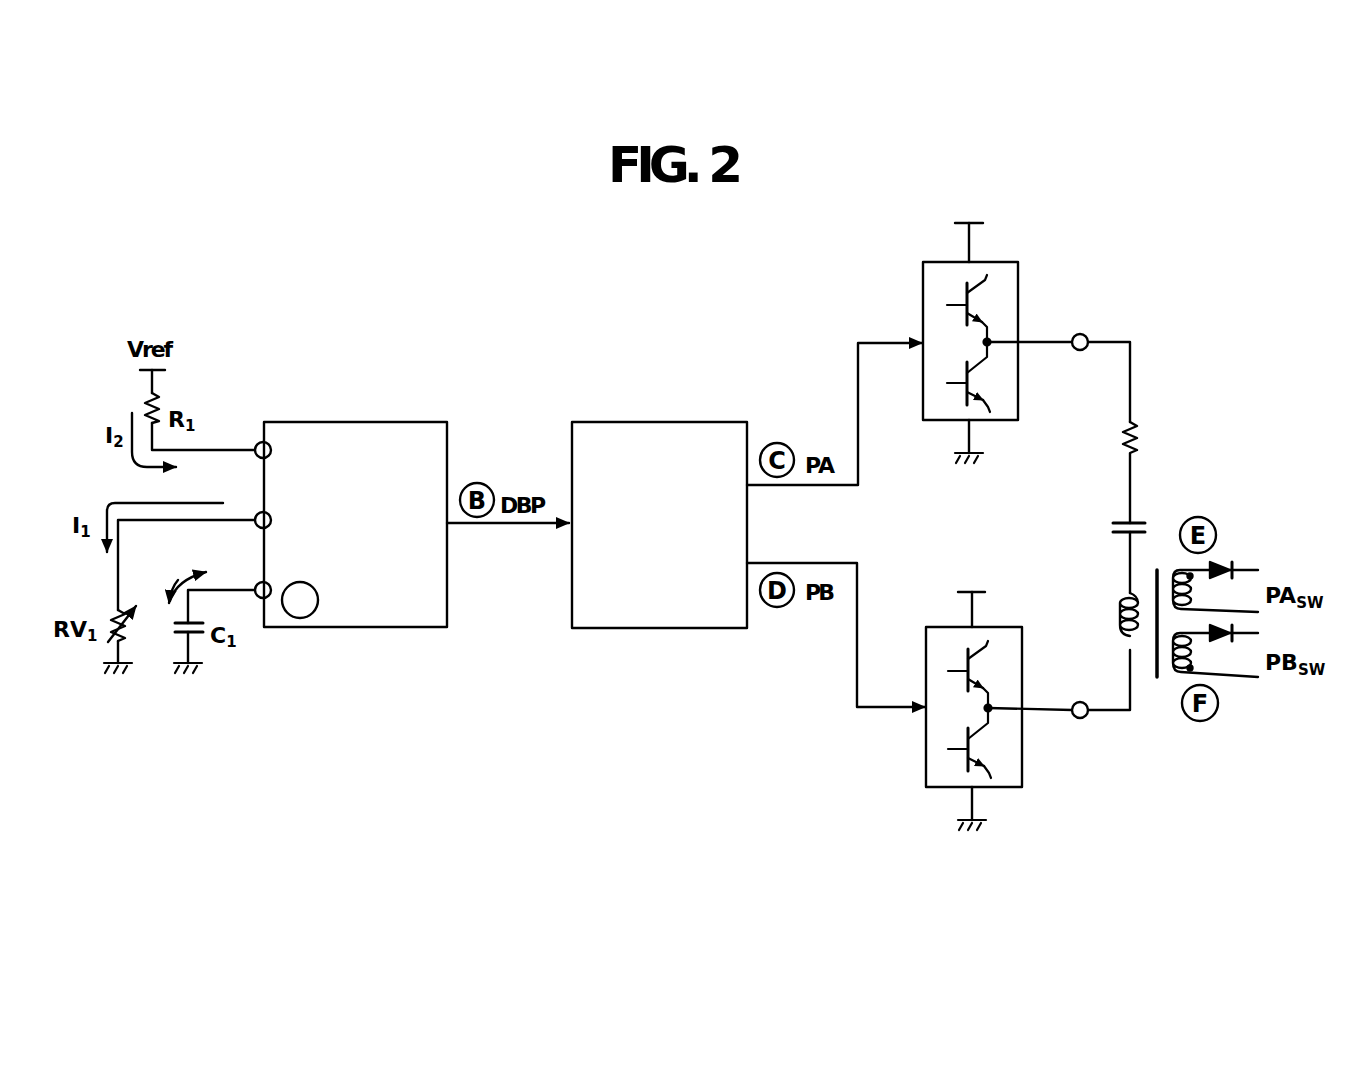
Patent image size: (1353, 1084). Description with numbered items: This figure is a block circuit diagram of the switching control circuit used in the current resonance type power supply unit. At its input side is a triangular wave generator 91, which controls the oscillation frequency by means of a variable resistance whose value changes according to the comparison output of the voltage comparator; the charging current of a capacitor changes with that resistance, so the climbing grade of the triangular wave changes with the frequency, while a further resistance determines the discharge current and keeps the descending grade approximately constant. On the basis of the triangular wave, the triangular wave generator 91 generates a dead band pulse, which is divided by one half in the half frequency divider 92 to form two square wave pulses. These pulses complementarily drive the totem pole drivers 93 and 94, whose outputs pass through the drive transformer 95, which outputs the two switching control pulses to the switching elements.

The triangular wave generator 91 is at (360, 628).
The ½ frequency divider 92 is at (693, 630).
The totem pole driver 93 is at (1007, 421).
The totem pole driver 94 is at (1010, 788).
The drive transformer 95 is at (1153, 655).